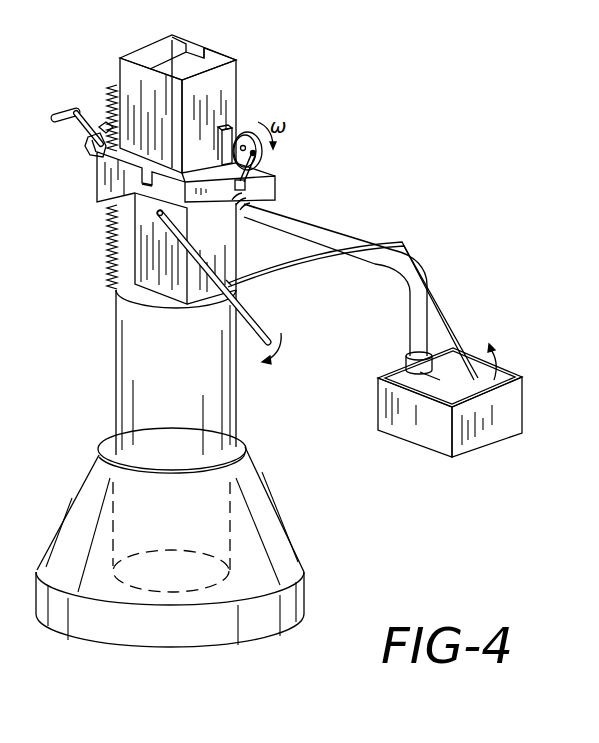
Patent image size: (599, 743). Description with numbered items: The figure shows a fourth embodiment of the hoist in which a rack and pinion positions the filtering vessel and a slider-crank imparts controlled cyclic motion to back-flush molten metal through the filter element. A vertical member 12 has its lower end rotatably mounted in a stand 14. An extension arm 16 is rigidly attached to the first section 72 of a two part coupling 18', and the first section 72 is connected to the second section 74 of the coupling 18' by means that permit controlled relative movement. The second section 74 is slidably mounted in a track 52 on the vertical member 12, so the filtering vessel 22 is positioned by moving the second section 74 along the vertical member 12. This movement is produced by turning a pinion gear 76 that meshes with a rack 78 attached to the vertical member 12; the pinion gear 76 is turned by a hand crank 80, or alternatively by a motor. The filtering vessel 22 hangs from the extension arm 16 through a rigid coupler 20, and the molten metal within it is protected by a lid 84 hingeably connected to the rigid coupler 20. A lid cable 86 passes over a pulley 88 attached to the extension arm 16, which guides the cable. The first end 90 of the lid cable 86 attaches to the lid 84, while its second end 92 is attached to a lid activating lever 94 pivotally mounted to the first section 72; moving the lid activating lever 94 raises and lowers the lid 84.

The vertical member 12 is at (100, 374).
The stand 14 is at (282, 517).
The extension arm 16 is at (313, 223).
The two part coupling 18' is at (97, 201).
The rigid coupler 20 is at (407, 360).
The filtering vessel 22 is at (525, 390).
The track 52 is at (178, 67).
The first section 72 is at (282, 173).
The second section 74 is at (97, 173).
The pinion gear 76 is at (100, 127).
The rack 78 is at (102, 252).
The hand crank 80 is at (55, 117).
The lid 84 is at (430, 380).
The lid cable 86 is at (372, 242).
The pulley 88 is at (410, 262).
The first end 90 is at (493, 396).
The second end 92 is at (228, 283).
The lid activating lever 94 is at (260, 323).